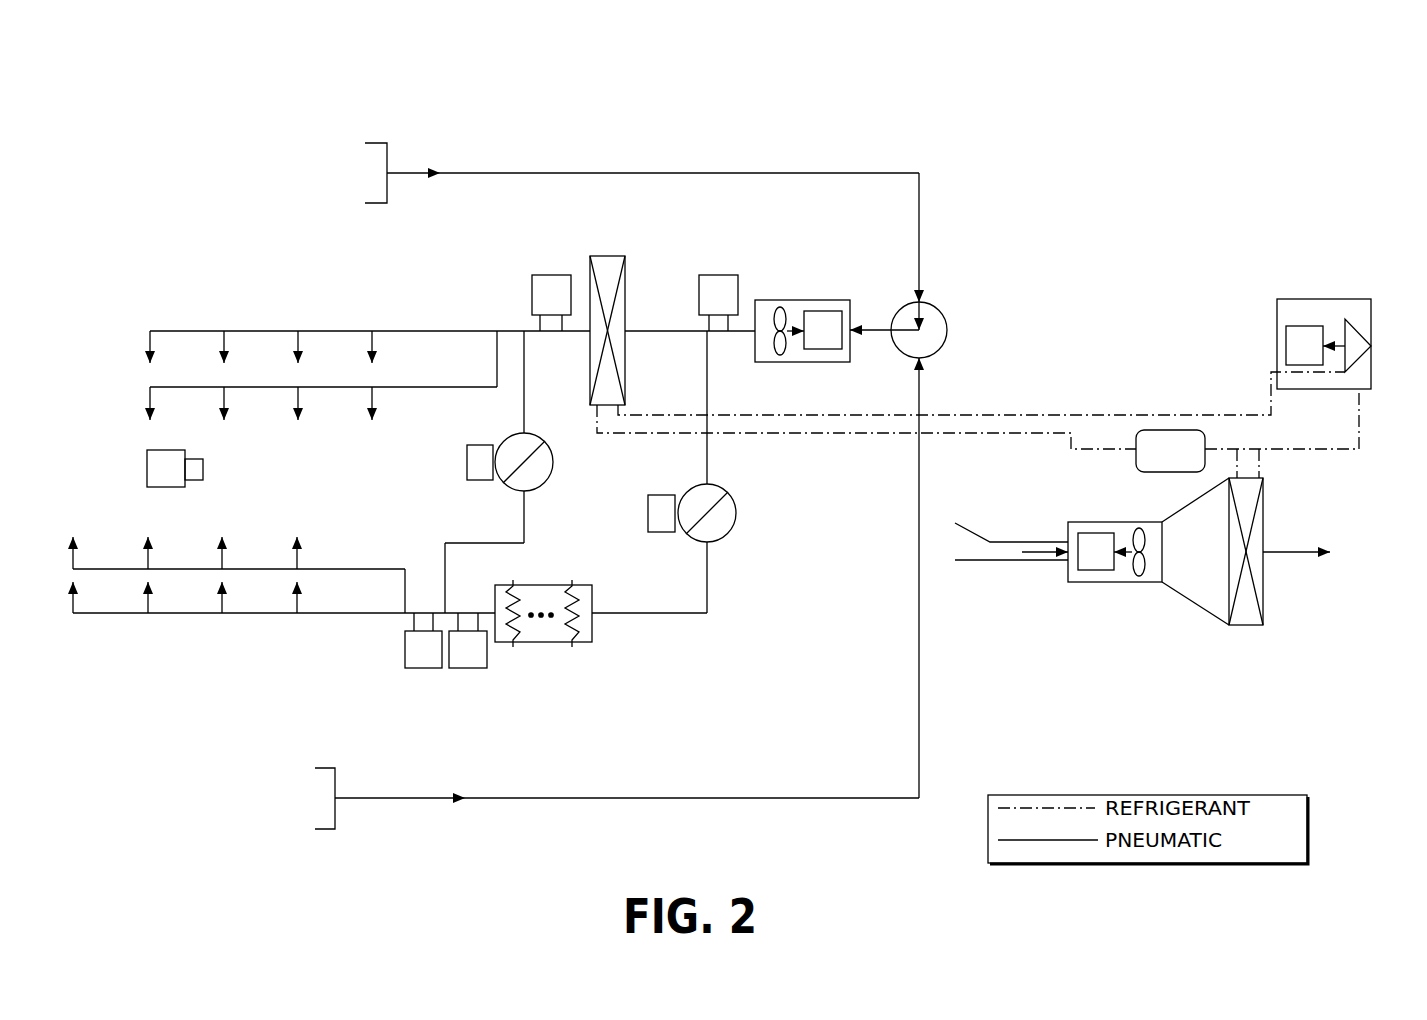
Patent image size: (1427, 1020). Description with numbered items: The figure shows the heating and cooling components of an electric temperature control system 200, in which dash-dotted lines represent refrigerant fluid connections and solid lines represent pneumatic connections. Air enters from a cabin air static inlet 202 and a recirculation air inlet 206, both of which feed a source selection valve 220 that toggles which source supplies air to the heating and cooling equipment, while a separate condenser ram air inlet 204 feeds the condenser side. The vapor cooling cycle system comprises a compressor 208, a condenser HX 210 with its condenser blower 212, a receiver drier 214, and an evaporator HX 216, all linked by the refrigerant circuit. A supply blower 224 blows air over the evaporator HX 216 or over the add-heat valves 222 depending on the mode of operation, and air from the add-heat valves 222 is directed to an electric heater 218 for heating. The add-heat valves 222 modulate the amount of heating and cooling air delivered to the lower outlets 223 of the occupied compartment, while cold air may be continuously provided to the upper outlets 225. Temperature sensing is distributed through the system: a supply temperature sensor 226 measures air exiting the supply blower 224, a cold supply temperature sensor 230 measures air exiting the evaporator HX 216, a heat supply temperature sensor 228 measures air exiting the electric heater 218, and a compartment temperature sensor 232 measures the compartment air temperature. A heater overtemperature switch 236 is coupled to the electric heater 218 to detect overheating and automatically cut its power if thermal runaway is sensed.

The temperature control system 200 is at (1243, 93).
The cabin air static inlet 202 is at (375, 142).
The condenser ram air inlet 204 is at (970, 565).
The recirculation air inlet 206 is at (330, 766).
The compressor 208 is at (1300, 299).
The condenser HX 210 is at (1238, 625).
The condenser blower 212 is at (1105, 583).
The receiver drier 214 is at (1172, 430).
The evaporator HX 216 is at (608, 256).
The electric heater 218 is at (592, 636).
The source selection valve 220 is at (942, 312).
The add-heat valves 222 is at (547, 486).
The lower outlets 223 is at (114, 527).
The supply blower 224 is at (787, 300).
The upper outlets 225 is at (340, 462).
The supply temperature sensor 226 is at (718, 275).
The heat supply temperature sensor 228 is at (425, 668).
The cold supply temperature sensor 230 is at (552, 275).
The compartment temperature sensor 232 is at (147, 454).
The heater overtemperature switch 236 is at (470, 668).